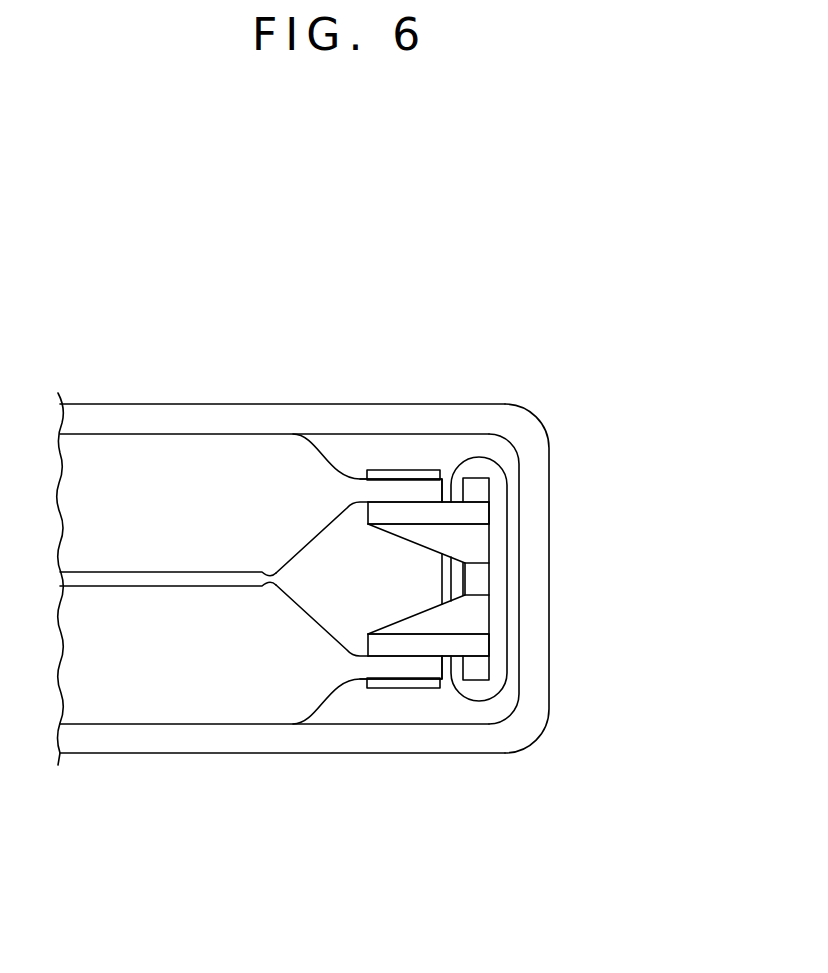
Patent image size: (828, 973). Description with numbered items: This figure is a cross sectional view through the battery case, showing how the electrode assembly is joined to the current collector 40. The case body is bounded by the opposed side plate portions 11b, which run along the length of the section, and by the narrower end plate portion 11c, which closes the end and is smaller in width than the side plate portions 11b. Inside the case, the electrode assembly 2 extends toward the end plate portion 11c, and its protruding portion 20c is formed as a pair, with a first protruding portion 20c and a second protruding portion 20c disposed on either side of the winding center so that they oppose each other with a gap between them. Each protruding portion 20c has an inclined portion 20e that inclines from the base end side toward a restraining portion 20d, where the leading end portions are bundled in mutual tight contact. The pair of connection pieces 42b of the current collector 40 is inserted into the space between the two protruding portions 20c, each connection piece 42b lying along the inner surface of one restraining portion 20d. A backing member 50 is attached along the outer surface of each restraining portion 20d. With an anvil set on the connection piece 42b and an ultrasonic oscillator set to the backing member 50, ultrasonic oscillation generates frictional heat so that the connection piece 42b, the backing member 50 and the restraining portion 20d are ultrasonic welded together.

The electric wire 2 is at (135, 465).
The side plate portion 11b is at (223, 417).
The end plate portion 11c is at (533, 574).
The protruding portion 20c is at (388, 311).
The restraining portion 20d is at (398, 488).
The inclined portion 20e is at (307, 467).
The current collector 40 is at (479, 579).
The connection piece 42b is at (478, 513).
The backing member 50 is at (413, 468).